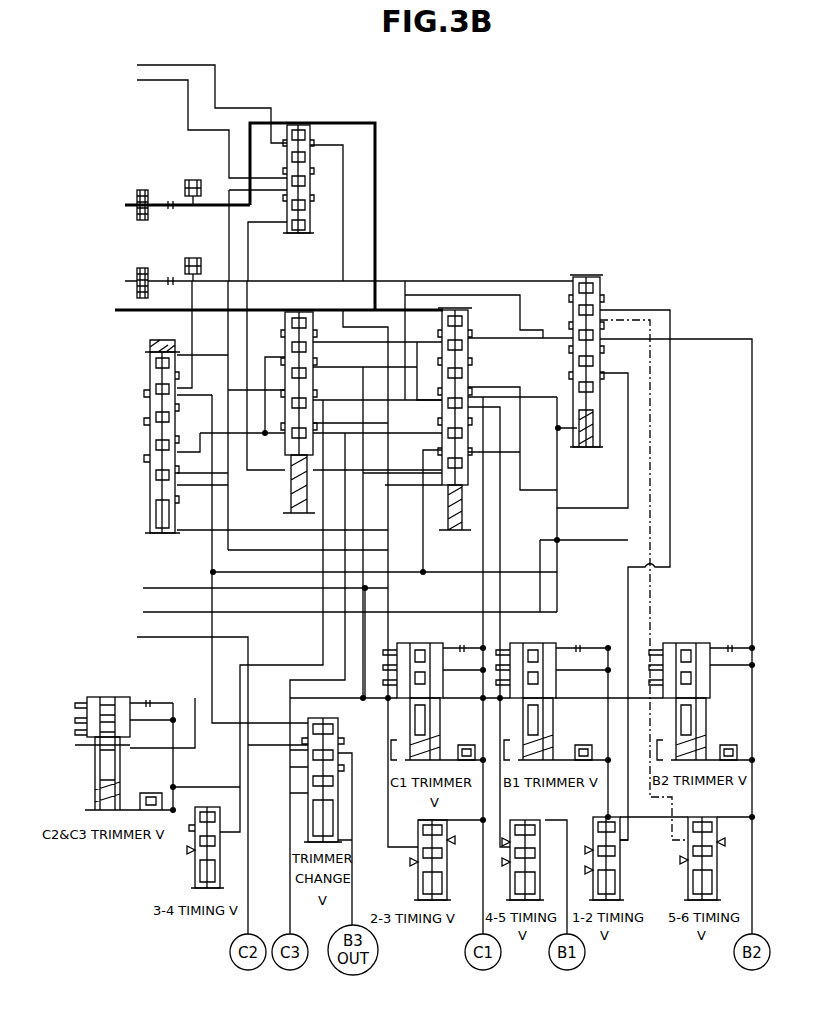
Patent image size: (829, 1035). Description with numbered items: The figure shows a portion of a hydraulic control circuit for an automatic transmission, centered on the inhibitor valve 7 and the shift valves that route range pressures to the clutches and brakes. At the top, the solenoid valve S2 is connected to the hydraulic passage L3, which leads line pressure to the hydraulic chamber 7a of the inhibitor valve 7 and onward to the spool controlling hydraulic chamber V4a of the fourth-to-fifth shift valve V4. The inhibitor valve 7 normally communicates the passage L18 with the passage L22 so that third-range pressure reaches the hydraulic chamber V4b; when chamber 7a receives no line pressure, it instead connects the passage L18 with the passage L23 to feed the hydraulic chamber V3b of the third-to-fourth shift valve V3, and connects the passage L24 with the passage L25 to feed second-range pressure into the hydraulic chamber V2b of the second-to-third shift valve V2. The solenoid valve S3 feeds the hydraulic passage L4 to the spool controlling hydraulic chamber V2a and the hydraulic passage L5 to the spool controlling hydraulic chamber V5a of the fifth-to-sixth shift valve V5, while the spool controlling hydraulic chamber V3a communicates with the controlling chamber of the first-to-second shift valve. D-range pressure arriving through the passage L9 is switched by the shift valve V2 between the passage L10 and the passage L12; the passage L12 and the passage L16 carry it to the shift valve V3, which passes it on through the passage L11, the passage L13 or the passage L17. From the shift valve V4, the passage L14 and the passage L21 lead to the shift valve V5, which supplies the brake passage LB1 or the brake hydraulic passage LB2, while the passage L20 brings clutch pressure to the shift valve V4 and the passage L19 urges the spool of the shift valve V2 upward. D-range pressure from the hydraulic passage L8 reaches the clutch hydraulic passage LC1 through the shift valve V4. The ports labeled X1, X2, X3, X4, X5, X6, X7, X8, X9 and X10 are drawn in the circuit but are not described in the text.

The passage L18 is at (146, 64).
The passage L24 is at (152, 82).
The passage L25 is at (228, 224).
The passage L23 is at (248, 254).
The passage L22 is at (343, 272).
The hydraulic passage L3 is at (378, 204).
The port X1 is at (128, 198).
The solenoid valve S2 is at (193, 179).
The port X2 is at (128, 276).
The solenoid valve S3 is at (195, 262).
The hydraulic passage L5 is at (405, 280).
The port X3 is at (130, 310).
The hydraulic chamber 7a is at (306, 124).
The inhibitor valve 7 is at (312, 172).
The spool controlling hydraulic chamber V5a is at (600, 275).
The 5-6 shift valve V5 is at (576, 276).
The passage of the brake LB1 is at (672, 410).
The hydraulic passage of the brake LB2 is at (752, 500).
The hydraulic passage of the clutch LC1 is at (563, 483).
The spool controlling hydraulic chamber V4a is at (462, 309).
The 4-5 shift valve V4 is at (442, 420).
The hydraulic chamber V4b is at (455, 532).
The passage L14 is at (476, 340).
The passage L11 is at (441, 294).
The passage L9 is at (501, 396).
The passage L21 is at (519, 468).
The passage L20 is at (441, 466).
The passage L19 is at (388, 532).
The spool controlling hydraulic chamber V3a is at (303, 315).
The 3-4 shift valve V3 is at (285, 312).
The hydraulic chamber V3b is at (291, 512).
The passage L17 is at (338, 332).
The passage L13 is at (330, 367).
The passage L16 is at (264, 361).
The passage L12 is at (265, 437).
The passage L10 is at (228, 482).
The hydraulic chamber V2b is at (164, 352).
The 2-3 shift valve V2 is at (150, 346).
The spool controlling hydraulic chamber V2a is at (178, 396).
The hydraulic passage L4 is at (194, 345).
The port X4 is at (143, 393).
The port X5 is at (143, 421).
The port X6 is at (143, 458).
The port X7 is at (161, 587).
The hydraulic passage L8 is at (256, 572).
The port X8 is at (172, 611).
The port X9 is at (168, 637).
The port X10 / C2&C3 trimmer valve X10 is at (76, 745).